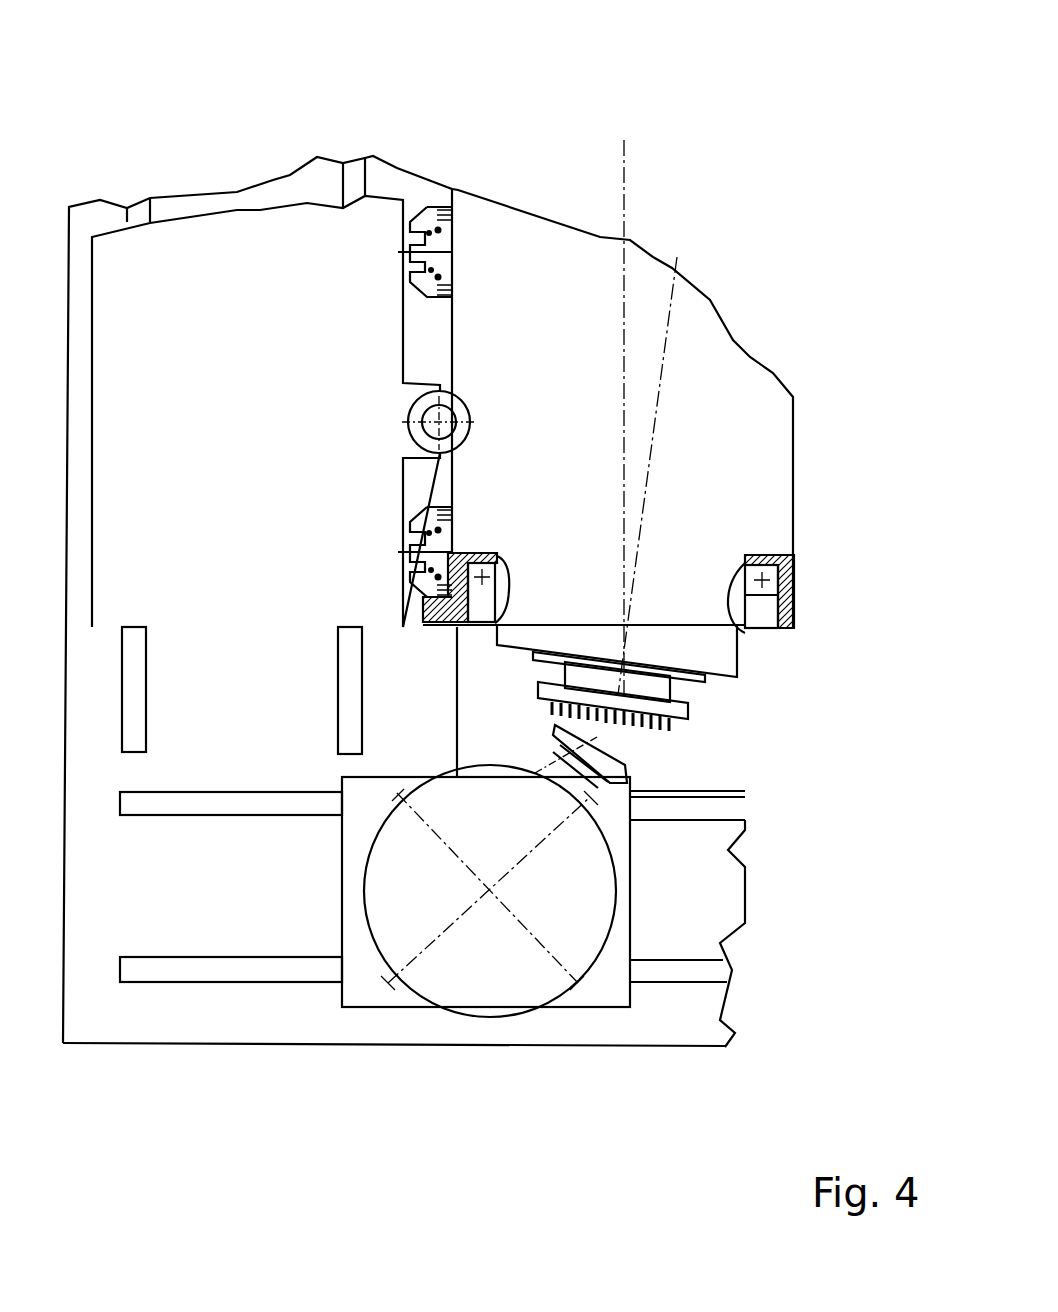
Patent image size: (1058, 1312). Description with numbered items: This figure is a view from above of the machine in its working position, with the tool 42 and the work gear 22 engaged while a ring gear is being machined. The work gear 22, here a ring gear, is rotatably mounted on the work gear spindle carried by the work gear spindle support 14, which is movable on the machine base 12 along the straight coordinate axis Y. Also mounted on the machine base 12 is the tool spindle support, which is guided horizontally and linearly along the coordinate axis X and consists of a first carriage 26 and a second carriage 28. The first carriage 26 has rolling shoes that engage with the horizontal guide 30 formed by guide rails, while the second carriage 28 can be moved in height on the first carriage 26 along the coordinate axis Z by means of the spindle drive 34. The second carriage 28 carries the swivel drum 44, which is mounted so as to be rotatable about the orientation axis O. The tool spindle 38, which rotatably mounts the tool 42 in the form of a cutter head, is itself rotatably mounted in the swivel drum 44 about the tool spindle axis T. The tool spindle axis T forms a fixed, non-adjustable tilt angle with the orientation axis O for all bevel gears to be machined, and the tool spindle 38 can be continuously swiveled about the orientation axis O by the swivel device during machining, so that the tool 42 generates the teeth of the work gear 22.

The machine base 12 is at (428, 688).
The work gear spindle support 14 is at (597, 1032).
The work gear 22 is at (627, 763).
The first carriage 26 is at (248, 262).
The second carriage 28 is at (773, 507).
The horizontal guide 30 is at (355, 168).
The spindle drive 34 is at (445, 415).
The tool spindle 38 is at (653, 687).
The tool 42 is at (540, 700).
The swivel drum 44 is at (722, 650).
The orientation axis O is at (627, 165).
The tool spindle axis T is at (672, 282).